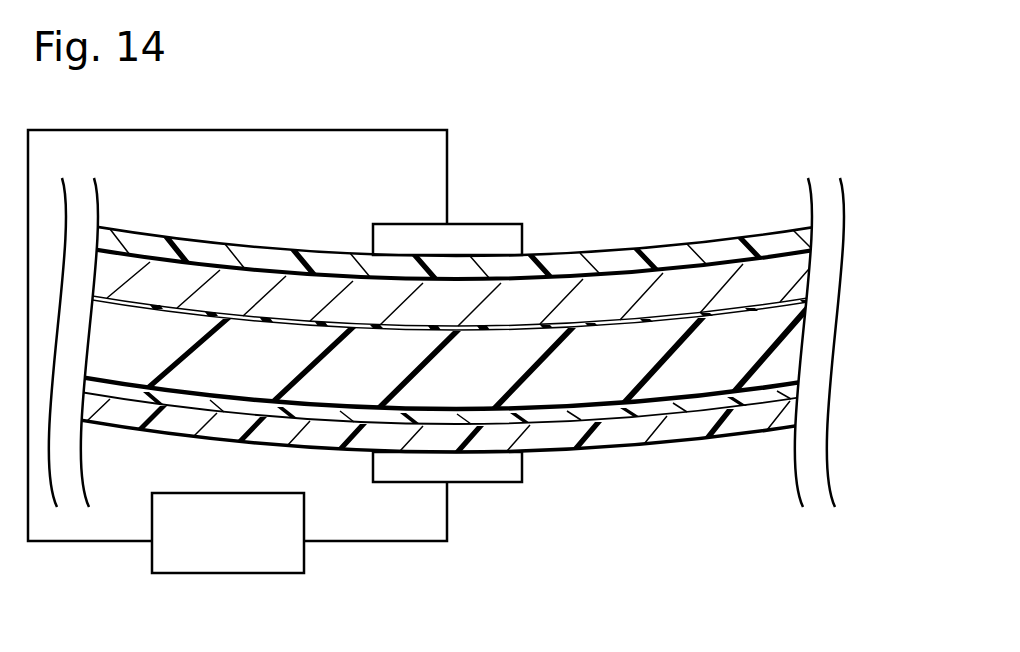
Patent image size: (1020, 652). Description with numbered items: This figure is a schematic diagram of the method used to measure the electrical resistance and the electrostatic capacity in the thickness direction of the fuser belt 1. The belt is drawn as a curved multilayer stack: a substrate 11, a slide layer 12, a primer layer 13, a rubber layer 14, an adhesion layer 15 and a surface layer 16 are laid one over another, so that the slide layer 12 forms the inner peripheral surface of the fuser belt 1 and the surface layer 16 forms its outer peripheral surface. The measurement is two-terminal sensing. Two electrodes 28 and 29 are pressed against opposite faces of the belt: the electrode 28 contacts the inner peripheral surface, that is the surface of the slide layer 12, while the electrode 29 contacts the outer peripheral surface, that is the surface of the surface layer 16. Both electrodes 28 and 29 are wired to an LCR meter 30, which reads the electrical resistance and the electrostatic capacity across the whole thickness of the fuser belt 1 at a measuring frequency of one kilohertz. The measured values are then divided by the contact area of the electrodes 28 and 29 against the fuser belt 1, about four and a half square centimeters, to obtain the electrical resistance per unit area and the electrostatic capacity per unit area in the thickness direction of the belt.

The fuser belt 1 is at (663, 502).
The substrate 11 is at (814, 258).
The slide layer 12 is at (818, 237).
The primer layer 13 is at (814, 300).
The rubber layer 14 is at (797, 357).
The adhesion layer 15 is at (790, 392).
The surface layer 16 is at (792, 418).
The electrode 28 is at (505, 222).
The electrode 29 is at (505, 485).
The LCR meter 30 is at (243, 575).